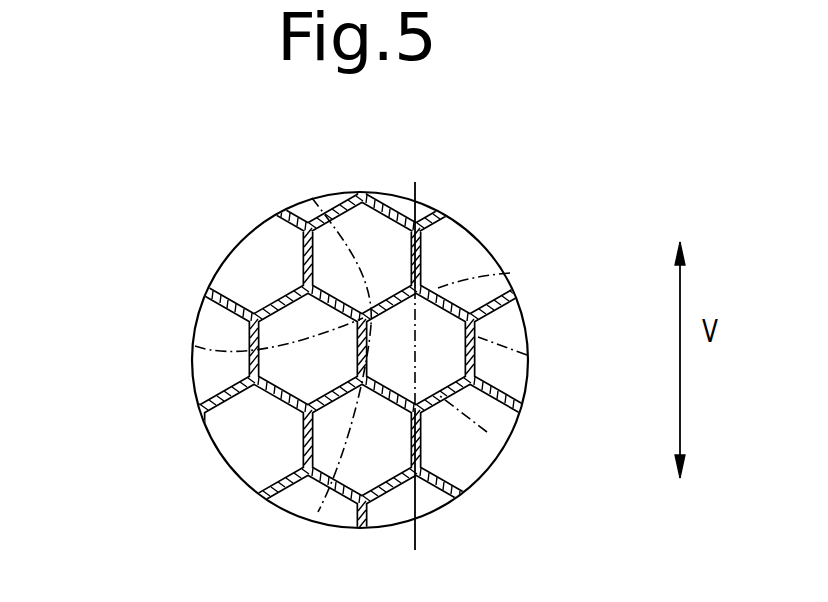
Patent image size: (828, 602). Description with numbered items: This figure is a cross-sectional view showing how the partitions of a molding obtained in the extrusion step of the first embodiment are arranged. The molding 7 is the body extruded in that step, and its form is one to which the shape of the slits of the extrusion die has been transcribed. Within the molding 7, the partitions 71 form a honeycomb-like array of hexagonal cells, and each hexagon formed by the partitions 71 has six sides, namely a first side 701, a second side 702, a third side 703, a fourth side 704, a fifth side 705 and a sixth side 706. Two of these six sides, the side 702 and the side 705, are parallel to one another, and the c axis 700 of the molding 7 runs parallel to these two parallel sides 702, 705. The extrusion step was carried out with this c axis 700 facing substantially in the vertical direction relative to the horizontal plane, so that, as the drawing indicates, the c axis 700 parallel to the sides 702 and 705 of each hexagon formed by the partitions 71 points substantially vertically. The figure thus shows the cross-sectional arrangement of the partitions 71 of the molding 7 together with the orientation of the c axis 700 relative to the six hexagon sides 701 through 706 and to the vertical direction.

The molding 7 is at (377, 349).
The partitions 71 is at (255, 316).
The c axis 700 is at (417, 192).
The side 701 is at (312, 198).
The side 702 is at (195, 346).
The side 703 is at (318, 512).
The side 704 is at (487, 432).
The side 705 is at (527, 355).
The side 706 is at (510, 273).